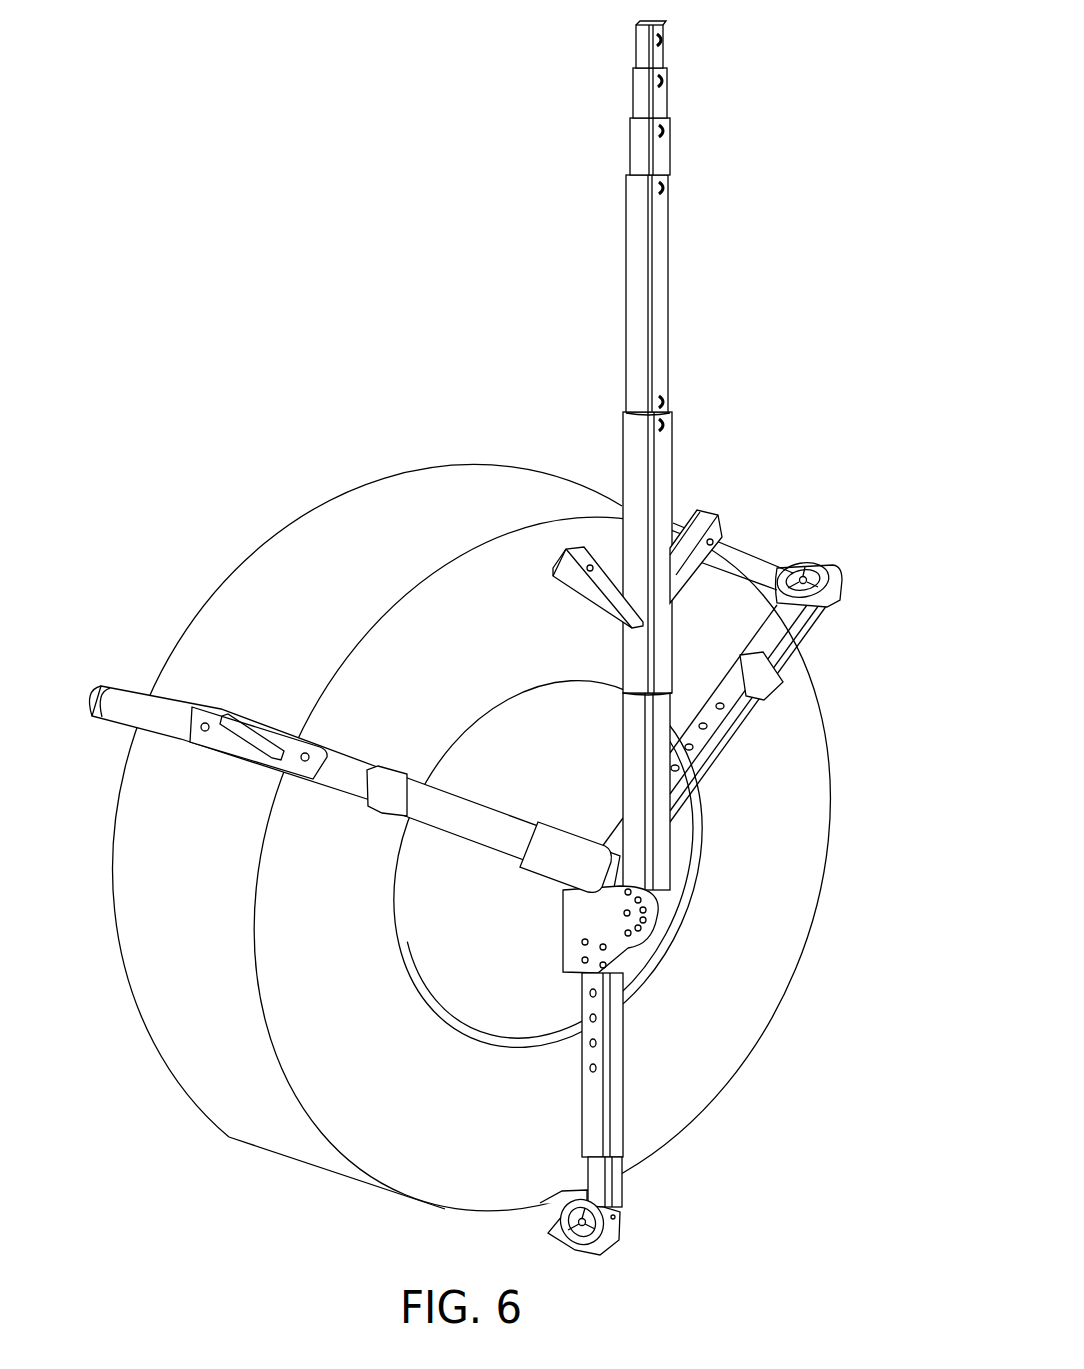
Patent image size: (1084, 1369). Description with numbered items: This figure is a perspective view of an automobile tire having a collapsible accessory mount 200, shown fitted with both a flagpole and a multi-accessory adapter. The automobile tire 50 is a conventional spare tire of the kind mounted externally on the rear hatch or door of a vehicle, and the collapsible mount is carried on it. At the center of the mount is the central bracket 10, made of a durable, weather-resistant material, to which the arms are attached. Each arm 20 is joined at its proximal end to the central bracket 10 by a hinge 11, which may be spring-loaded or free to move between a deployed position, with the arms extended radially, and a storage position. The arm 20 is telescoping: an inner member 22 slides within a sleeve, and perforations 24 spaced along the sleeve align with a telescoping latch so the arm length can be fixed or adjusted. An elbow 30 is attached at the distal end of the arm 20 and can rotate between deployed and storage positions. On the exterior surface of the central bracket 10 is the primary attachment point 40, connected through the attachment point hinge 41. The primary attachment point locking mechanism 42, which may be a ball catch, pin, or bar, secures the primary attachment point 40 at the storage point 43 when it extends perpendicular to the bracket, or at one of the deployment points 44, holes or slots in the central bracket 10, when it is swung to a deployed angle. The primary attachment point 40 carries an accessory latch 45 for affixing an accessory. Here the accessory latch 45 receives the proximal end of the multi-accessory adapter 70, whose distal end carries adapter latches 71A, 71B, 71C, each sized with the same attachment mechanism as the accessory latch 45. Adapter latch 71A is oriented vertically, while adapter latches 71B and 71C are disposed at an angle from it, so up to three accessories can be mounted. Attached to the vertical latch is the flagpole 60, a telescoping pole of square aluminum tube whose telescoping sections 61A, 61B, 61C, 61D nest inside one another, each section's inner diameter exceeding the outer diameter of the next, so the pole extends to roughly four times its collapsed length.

The automobile tire having a collapsible accessory mount 200 is at (415, 375).
The central bracket 10 is at (637, 958).
The hinge 11 is at (638, 920).
The arm 20 is at (642, 1145).
The inner member 22 is at (624, 1188).
The perforations 24 is at (753, 689).
The elbow 30 is at (606, 1258).
The primary attachment point 40 is at (676, 851).
The attachment point hinge 41 is at (692, 942).
The primary attachment point locking mechanism 42 is at (593, 880).
The storage point 43 is at (648, 910).
The deployment points 44 is at (643, 893).
The accessory latch 45 is at (669, 711).
The automobile tire 50 is at (352, 568).
The flagpole 60 is at (675, 223).
The telescoping section 61A is at (677, 210).
The telescoping section 61B is at (673, 136).
The telescoping section 61C is at (670, 88).
The telescoping section 61D is at (672, 42).
The multi-accessory adapter 70 is at (645, 544).
The adapter latch 71A is at (678, 420).
The adapter latch 71B is at (727, 520).
The adapter latch 71C is at (550, 553).